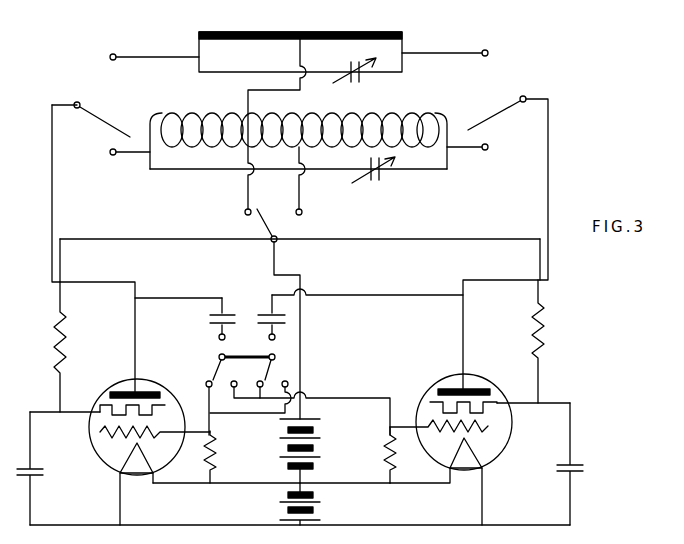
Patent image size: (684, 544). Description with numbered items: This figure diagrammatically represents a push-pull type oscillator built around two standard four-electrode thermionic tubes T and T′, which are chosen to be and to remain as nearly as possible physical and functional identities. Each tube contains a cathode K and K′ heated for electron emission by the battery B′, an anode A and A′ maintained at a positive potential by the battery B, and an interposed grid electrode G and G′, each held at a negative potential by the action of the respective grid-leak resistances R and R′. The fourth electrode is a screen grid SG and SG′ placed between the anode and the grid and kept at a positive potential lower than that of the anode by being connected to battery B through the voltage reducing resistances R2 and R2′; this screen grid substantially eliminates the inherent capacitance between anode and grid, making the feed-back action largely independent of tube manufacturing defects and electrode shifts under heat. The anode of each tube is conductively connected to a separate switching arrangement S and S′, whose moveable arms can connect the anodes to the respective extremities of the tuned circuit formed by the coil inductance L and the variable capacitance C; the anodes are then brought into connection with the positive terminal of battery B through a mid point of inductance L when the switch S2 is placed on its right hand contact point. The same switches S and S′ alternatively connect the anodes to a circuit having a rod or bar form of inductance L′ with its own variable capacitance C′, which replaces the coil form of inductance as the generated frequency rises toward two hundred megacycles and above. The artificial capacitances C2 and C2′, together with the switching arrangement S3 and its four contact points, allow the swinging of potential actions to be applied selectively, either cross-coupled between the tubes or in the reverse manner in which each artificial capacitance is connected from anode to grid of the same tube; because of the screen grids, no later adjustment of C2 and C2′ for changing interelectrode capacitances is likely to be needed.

The rod or bar form of inductance L′ is at (403, 34).
The variable capacitance C′ is at (362, 75).
The inductance L is at (428, 110).
The switching arrangement S′ is at (106, 97).
The switching arrangement S is at (501, 104).
The variable capacitance C is at (382, 175).
The switch S2 is at (267, 217).
The voltage reducing resistance R2′ is at (53, 350).
The voltage reducing resistance R2 is at (547, 340).
The artificial capacitance C2′ is at (208, 314).
The artificial capacitance C2 is at (262, 314).
The switching arrangement S3 is at (247, 360).
The grid-leak resistance R′ is at (216, 450).
The grid-leak resistance R is at (397, 448).
The battery B is at (322, 455).
The battery B′ is at (322, 503).
The thermionic tube T′ is at (97, 460).
The thermionic tube T is at (500, 462).
The anode A′ is at (147, 392).
The anode A is at (450, 389).
The screen grid SG′ is at (100, 412).
The screen grid SG is at (490, 408).
The grid electrode G′ is at (100, 432).
The grid electrode G is at (488, 426).
The cathode K′ is at (145, 463).
The cathode K is at (452, 452).